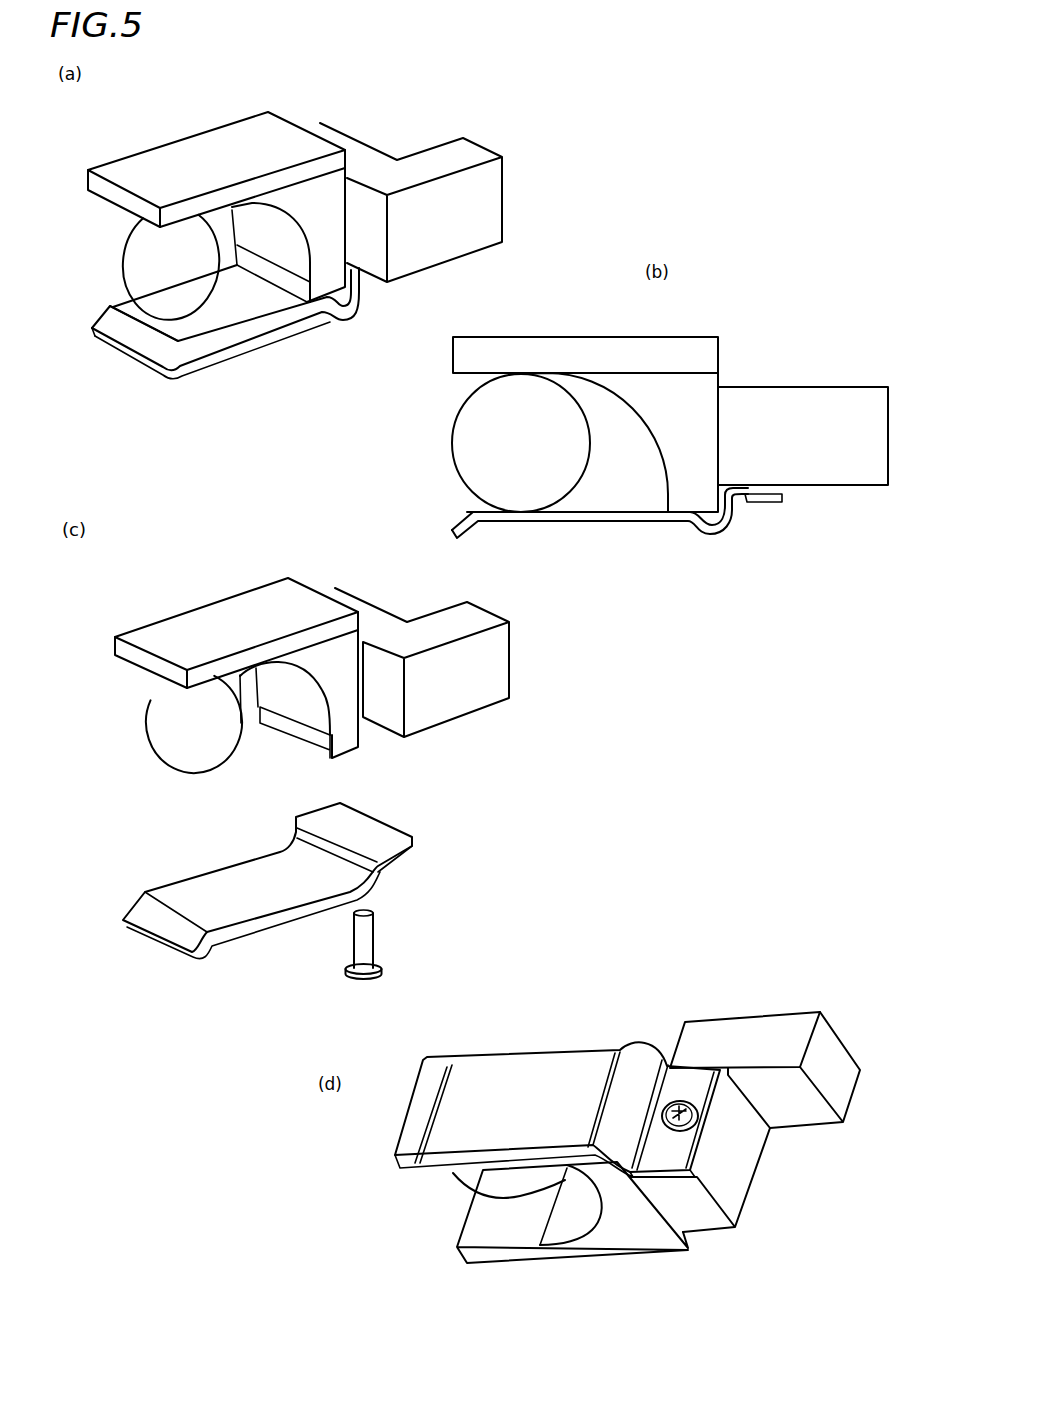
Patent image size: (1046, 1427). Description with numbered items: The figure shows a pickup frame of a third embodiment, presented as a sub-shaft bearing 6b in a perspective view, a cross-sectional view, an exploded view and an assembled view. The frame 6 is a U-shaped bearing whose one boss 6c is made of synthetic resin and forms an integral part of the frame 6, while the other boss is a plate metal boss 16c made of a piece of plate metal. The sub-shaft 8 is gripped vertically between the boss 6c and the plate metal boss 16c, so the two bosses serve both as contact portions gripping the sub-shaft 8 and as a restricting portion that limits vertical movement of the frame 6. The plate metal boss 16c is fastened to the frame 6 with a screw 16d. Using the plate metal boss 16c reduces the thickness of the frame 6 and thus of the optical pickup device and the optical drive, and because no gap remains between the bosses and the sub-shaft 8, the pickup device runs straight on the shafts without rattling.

The frame 6 is at (423, 131).
The sub-shaft bearing 6b is at (178, 128).
The boss 6c is at (160, 150).
The sub-shaft 8 is at (128, 240).
The plate metal boss 16c is at (233, 314).
The screw 16d is at (376, 924).